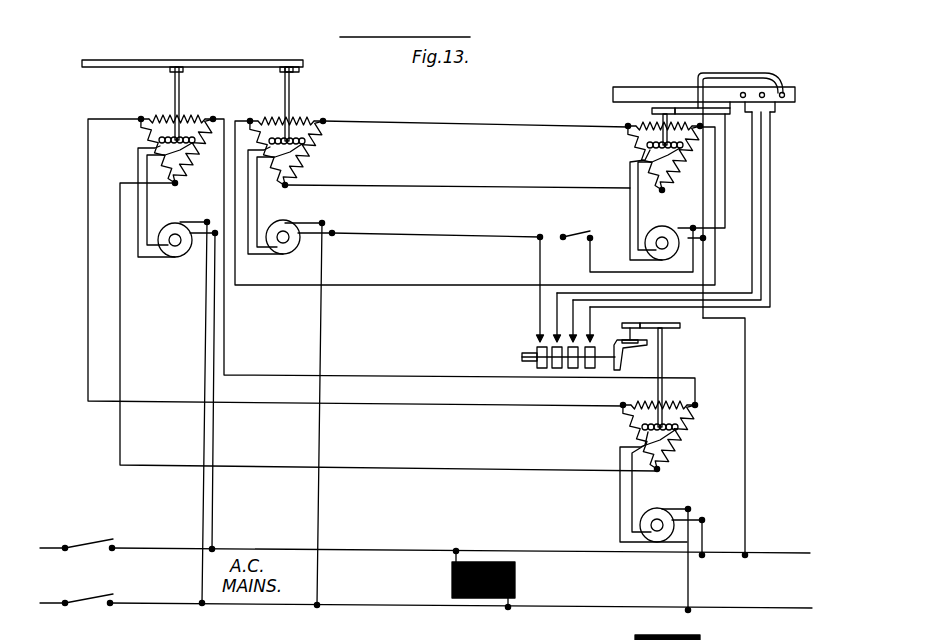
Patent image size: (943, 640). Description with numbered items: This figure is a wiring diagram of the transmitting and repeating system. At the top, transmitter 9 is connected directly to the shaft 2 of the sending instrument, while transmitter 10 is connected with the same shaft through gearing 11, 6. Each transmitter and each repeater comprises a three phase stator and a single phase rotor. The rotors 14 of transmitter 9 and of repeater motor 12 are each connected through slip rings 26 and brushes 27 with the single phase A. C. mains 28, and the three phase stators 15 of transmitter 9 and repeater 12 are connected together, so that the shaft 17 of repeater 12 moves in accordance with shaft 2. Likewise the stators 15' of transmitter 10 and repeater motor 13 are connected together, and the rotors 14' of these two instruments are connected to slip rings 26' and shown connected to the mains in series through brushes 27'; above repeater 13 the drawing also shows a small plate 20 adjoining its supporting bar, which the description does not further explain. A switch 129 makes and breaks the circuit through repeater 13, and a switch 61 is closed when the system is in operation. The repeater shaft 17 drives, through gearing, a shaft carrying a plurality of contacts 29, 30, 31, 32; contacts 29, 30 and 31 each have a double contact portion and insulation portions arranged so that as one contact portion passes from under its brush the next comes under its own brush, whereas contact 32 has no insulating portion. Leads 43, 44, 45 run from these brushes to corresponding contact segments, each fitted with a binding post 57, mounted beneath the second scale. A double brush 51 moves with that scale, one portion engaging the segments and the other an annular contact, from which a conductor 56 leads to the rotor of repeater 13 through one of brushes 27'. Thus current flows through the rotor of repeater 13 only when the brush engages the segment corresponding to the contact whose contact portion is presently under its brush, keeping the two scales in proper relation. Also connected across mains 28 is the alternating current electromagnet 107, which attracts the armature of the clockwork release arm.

The gearing 6 is at (125, 60).
The gearing 11 is at (290, 67).
The shaft 2 is at (181, 84).
The transmitter 9 is at (170, 126).
The transmitter 10 is at (286, 127).
The repeater motor 13 is at (655, 153).
The repeater motor 12 is at (672, 433).
The rotors 14 is at (438, 273).
The rotors 14' is at (491, 138).
The three phase stators 15 is at (431, 317).
The stators 15' is at (465, 196).
The slip rings 26 is at (412, 372).
The slip rings 26' is at (470, 229).
The brushes 27 is at (442, 403).
The brushes 27' is at (505, 359).
The plate 20 is at (652, 111).
The double brush 51 is at (750, 74).
The binding post 57 is at (783, 93).
The conductor 56 is at (726, 369).
The switch 129 is at (615, 275).
The lead-wire 45 is at (557, 308).
The lead-wire 44 is at (570, 320).
The lead-wire 43 is at (590, 322).
The contact 32 is at (523, 362).
The contact 31 is at (542, 370).
The contact 30 is at (558, 370).
The contact 29 is at (592, 370).
The repeater shaft 17 is at (664, 357).
The switch 61 is at (83, 555).
The A. C. mains 28 is at (364, 553).
The alternating current electromagnet 107 is at (518, 578).